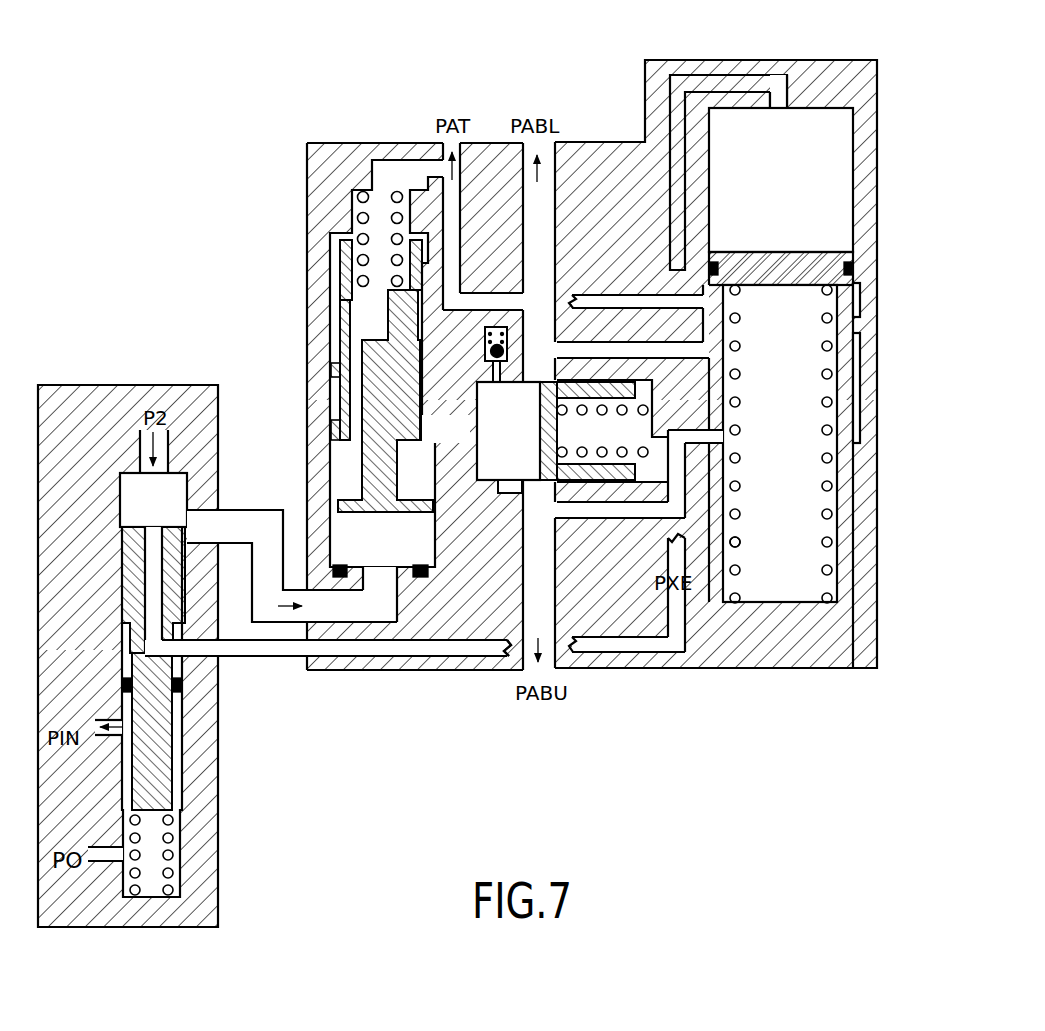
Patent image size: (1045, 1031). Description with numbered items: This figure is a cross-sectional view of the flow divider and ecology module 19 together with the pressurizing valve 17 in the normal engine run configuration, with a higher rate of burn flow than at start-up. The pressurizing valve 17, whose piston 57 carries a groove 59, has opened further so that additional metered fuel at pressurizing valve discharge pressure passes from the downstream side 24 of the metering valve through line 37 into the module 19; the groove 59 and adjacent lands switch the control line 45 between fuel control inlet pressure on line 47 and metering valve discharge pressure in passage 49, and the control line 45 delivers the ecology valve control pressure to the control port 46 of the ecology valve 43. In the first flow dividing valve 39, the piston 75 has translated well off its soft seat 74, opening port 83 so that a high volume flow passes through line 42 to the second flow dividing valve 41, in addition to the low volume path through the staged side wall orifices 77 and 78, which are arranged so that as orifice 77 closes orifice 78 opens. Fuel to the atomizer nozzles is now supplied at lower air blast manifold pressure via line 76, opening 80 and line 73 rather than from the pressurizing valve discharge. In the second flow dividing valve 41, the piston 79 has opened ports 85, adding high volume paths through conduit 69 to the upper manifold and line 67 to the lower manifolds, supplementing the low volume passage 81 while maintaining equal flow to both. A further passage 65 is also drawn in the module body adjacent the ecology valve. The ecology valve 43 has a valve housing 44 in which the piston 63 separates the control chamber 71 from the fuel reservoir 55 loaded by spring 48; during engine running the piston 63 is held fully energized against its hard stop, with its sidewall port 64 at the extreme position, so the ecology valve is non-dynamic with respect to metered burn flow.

The pressurizing valve 17 is at (232, 791).
The flow divider and ecology module 19 is at (657, 690).
The downstream side of metering valve 24 is at (168, 465).
The line 37 is at (241, 510).
The first flow dividing valve 39 is at (290, 246).
The second flow dividing valve 41 is at (645, 420).
The line 42 is at (443, 446).
The ecology valve 43 is at (752, 602).
The valve housing 44 is at (762, 660).
The control line 45 is at (264, 656).
The control port 46 is at (790, 95).
The line 47 is at (95, 740).
The spring 48 is at (740, 540).
The passage 49 is at (128, 525).
The fuel reservoir 55 is at (794, 526).
The piston 57 is at (180, 797).
The groove 59 is at (178, 740).
The piston 63 is at (780, 287).
The sidewall port 64 is at (720, 440).
The passage 65 is at (616, 298).
The line 67 is at (553, 145).
The conduit 69 is at (508, 652).
The control chamber 71 is at (796, 204).
The line 73 is at (450, 190).
The soft seat 74 is at (345, 565).
The piston 75 is at (345, 265).
The line 76 is at (388, 167).
The side wall orifice 77 is at (360, 398).
The side wall orifice 78 is at (336, 430).
The piston 79 is at (540, 430).
The opening 80 is at (340, 306).
The conduit 81 is at (505, 496).
The port 83 is at (412, 446).
The ports 85 is at (530, 388).